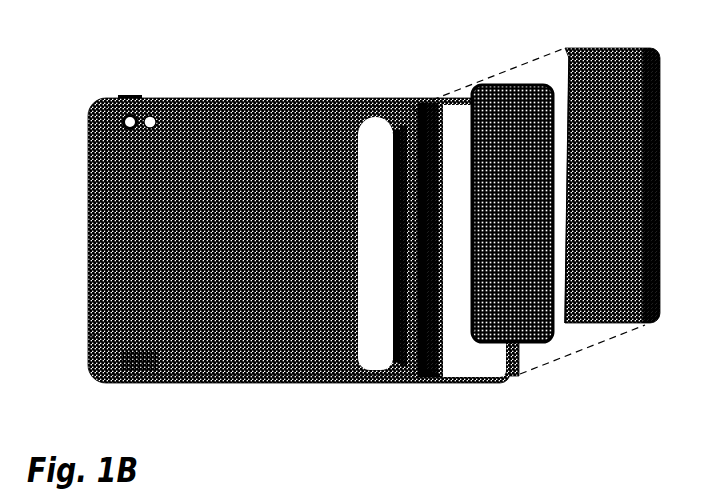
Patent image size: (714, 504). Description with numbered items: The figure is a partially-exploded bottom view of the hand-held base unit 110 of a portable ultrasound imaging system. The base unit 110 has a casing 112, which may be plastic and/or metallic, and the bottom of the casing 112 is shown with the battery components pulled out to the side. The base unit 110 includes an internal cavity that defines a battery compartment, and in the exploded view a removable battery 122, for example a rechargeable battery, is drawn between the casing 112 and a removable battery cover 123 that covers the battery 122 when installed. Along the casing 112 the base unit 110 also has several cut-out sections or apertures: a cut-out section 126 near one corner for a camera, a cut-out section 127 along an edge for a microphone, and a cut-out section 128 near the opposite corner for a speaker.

The hand-held base unit 110 is at (349, 239).
The casing 112 is at (94, 103).
The removable battery 122 is at (549, 90).
The removable battery cover 123 is at (598, 57).
The cut-out section for a camera 126 is at (135, 114).
The cut-out section for a microphone 127 is at (92, 335).
The cut-out section for a speaker 128 is at (141, 374).